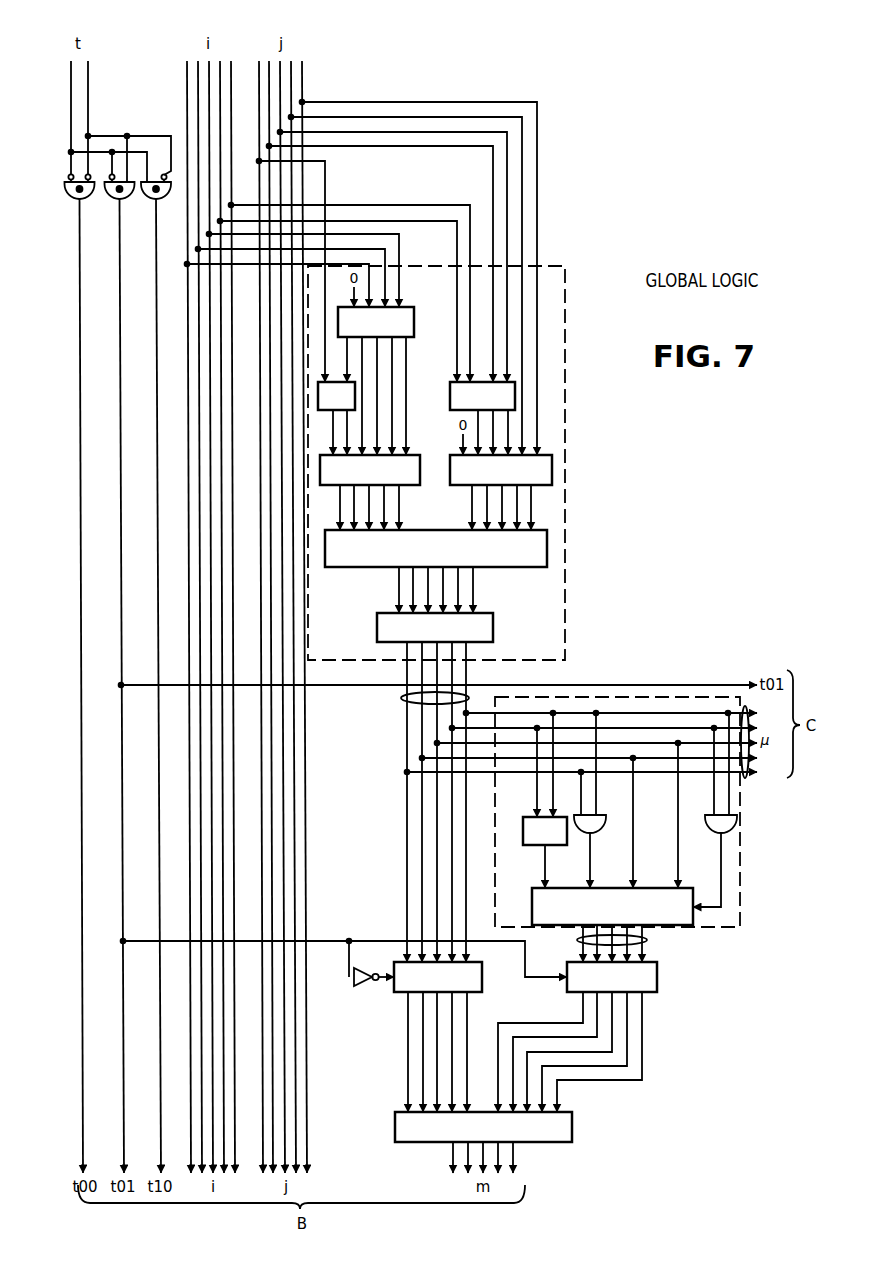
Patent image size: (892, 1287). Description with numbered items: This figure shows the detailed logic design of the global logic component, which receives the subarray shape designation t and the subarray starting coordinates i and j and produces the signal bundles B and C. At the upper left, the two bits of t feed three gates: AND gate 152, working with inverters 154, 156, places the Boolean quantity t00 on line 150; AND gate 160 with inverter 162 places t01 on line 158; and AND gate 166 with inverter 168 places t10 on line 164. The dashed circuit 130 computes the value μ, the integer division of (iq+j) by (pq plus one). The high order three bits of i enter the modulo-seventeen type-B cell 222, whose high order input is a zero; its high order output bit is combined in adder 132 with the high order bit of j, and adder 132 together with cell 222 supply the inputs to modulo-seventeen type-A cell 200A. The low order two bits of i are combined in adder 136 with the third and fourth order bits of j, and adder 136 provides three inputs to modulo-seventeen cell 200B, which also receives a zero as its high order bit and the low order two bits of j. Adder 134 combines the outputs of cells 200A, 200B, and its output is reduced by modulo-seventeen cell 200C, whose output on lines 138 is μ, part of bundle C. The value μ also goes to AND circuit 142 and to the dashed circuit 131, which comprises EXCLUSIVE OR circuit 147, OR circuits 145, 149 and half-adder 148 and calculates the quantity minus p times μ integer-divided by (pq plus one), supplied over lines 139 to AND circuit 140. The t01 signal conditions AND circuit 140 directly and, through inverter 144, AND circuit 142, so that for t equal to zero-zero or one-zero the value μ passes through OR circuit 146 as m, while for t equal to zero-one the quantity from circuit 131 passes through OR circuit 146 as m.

The circuit for calculating μ 130 is at (565, 560).
The circuit 131 is at (740, 880).
The adder 132 is at (355, 397).
The adder 134 is at (505, 567).
The adder 136 is at (450, 402).
The lines 138 is at (401, 700).
The lines 139 is at (647, 940).
The AND circuit 140 is at (657, 978).
The AND circuit 142 is at (482, 978).
The inverter 144 is at (366, 987).
The OR circuit 145 is at (598, 830).
The OR circuit 146 is at (572, 1128).
The EXCLUSIVE OR circuit 147 is at (523, 825).
The half-adder 148 is at (532, 906).
The OR circuit 149 is at (737, 826).
The line 150 is at (78, 412).
The AND gate 152 is at (74, 199).
The inverter 154 is at (67, 176).
The inverter 156 is at (85, 174).
The line 158 is at (119, 452).
The AND gate 160 is at (117, 199).
The inverter 162 is at (111, 174).
The line 164 is at (159, 503).
The AND gate 166 is at (152, 199).
The inverter 168 is at (166, 174).
The MOD-17A cell 200A is at (410, 485).
The MOD-17A cell 200B is at (540, 485).
The MOD-17A cell 200C is at (493, 630).
The MOD-17B cell 222 is at (414, 322).